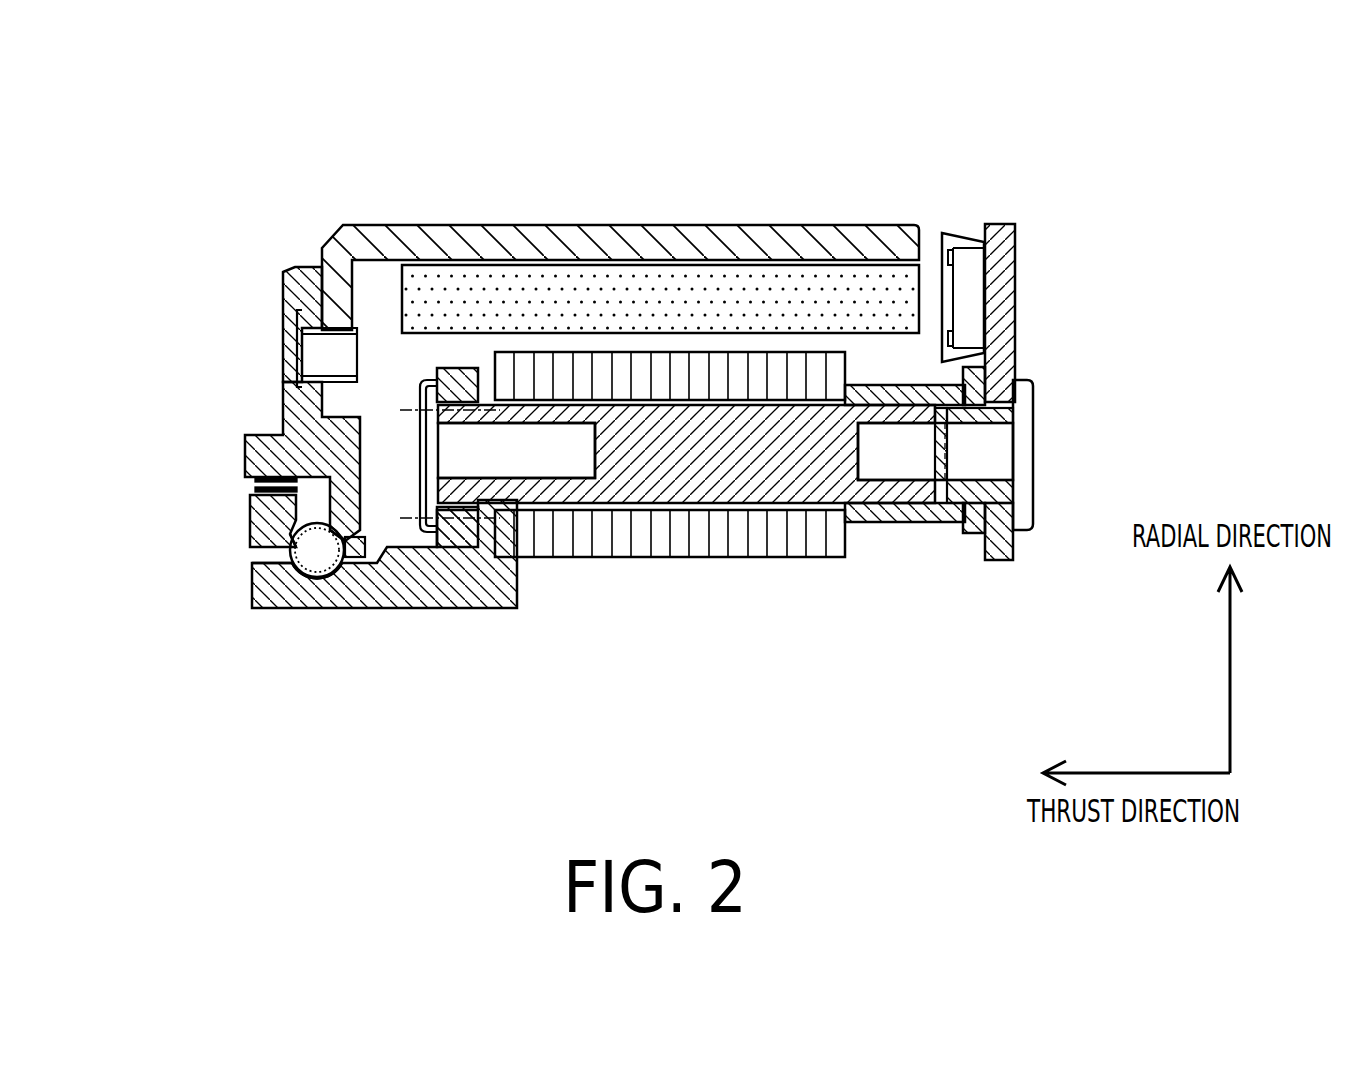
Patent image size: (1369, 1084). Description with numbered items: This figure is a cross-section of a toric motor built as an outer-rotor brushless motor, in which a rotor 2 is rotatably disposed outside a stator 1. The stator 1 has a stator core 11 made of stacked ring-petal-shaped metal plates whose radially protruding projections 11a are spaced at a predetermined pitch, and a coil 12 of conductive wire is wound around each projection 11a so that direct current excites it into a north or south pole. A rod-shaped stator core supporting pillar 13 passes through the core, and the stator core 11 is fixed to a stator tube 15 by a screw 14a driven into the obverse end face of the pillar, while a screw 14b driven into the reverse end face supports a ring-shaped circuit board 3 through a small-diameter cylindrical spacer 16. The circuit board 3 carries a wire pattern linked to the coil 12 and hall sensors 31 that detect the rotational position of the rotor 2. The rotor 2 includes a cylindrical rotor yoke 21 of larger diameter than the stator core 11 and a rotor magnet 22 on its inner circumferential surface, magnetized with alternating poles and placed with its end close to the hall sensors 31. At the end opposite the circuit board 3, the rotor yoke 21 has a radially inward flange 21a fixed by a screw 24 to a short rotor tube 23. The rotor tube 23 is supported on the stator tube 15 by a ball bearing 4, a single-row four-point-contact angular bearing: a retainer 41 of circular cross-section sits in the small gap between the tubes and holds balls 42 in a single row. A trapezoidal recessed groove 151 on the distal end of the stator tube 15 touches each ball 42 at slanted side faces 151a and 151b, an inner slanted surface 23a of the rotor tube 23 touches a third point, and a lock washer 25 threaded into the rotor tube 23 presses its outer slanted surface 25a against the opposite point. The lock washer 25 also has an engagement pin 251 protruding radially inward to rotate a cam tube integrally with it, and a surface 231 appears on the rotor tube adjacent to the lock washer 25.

The stator 1 is at (652, 648).
The rotor 2 is at (719, 198).
The circuit board 3 is at (1016, 337).
The ball bearing 4 is at (274, 588).
The stator core 11 is at (740, 545).
The projection 11a is at (858, 522).
The coil 12 is at (407, 405).
The stator core supporting pillar 13 is at (655, 460).
The screw 14a is at (548, 465).
The screw 14b is at (1032, 458).
The stator tube 15 is at (478, 592).
The spacer 16 is at (977, 540).
The rotor yoke 21 is at (590, 237).
The flange 21a is at (333, 254).
The rotor magnet 22 is at (863, 290).
The rotor tube 23 is at (297, 291).
The inner slanted surface 23a is at (318, 515).
The screw 24 is at (293, 345).
The lock washer 25 is at (252, 510).
The outer slanted surface 25a is at (283, 546).
The hall sensor 31 is at (970, 293).
The retainer 41 is at (356, 546).
The ball 42 is at (268, 562).
The recessed groove 151 is at (345, 602).
The slanted side face 151a is at (306, 582).
The slanted side face 151b is at (366, 600).
The hub flange surface 231 is at (277, 477).
The engagement pin 251 is at (277, 477).